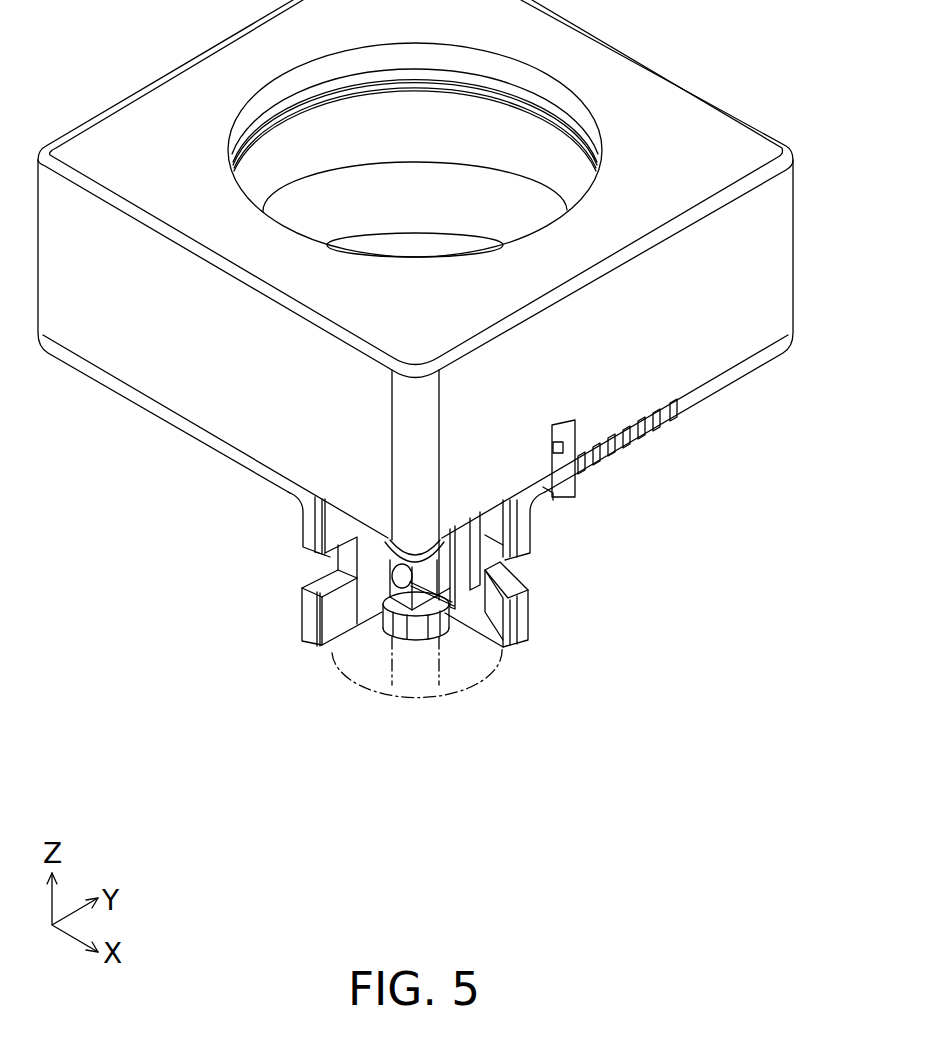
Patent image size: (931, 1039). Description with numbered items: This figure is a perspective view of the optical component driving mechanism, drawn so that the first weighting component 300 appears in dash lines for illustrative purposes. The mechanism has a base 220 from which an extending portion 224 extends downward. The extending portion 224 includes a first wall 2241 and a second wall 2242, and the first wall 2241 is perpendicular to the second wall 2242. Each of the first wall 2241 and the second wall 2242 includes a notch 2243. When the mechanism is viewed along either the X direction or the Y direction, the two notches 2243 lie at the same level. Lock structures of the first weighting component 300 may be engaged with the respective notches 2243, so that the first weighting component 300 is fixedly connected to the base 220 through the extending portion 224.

The base 220 is at (134, 401).
The extending portion 224 is at (360, 612).
The first wall 2241 is at (340, 528).
The second wall 2242 is at (497, 525).
The notch 2243 is at (333, 587).
The first weighting component 300 is at (452, 648).